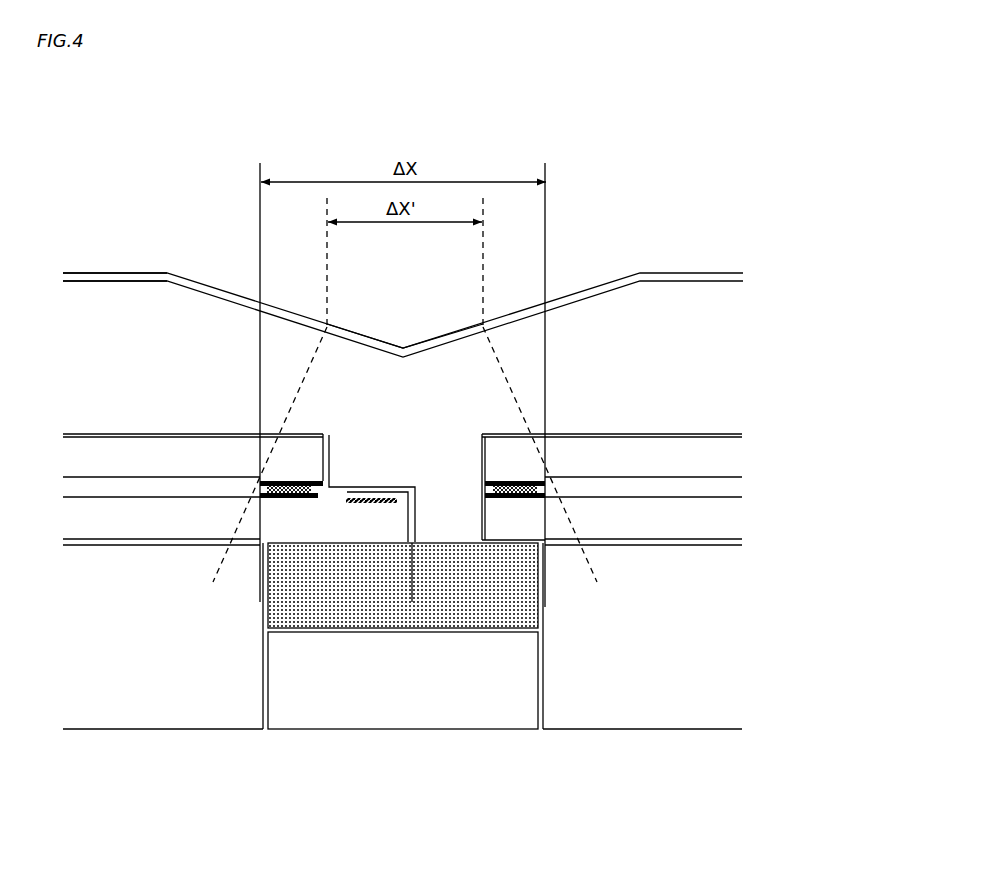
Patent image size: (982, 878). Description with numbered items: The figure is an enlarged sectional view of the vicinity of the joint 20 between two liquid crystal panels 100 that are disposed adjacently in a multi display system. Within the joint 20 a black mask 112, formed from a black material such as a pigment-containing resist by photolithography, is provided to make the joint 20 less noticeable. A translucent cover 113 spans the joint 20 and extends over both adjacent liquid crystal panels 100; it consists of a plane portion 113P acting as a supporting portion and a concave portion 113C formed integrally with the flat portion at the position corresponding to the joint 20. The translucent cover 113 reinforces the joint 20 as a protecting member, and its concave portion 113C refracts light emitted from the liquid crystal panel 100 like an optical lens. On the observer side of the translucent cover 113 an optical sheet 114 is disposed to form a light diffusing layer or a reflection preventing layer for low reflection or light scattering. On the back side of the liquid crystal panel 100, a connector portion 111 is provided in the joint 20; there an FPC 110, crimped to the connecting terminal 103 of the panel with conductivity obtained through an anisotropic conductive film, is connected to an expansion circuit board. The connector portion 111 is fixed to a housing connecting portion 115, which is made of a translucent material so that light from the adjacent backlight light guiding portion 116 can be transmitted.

The joint 20 is at (519, 142).
The liquid crystal panel 100 is at (144, 458).
The connecting terminal 103 is at (352, 503).
The FPC 110 is at (412, 578).
The connector portion 111 is at (350, 608).
The black mask 112 is at (362, 455).
The translucent cover 113 is at (703, 328).
The plane portion 113P is at (104, 292).
The concave portion 113C is at (406, 324).
The optical sheet 114 is at (700, 270).
The housing connecting portion 115 is at (382, 688).
The backlight light guiding portion 116 is at (110, 708).